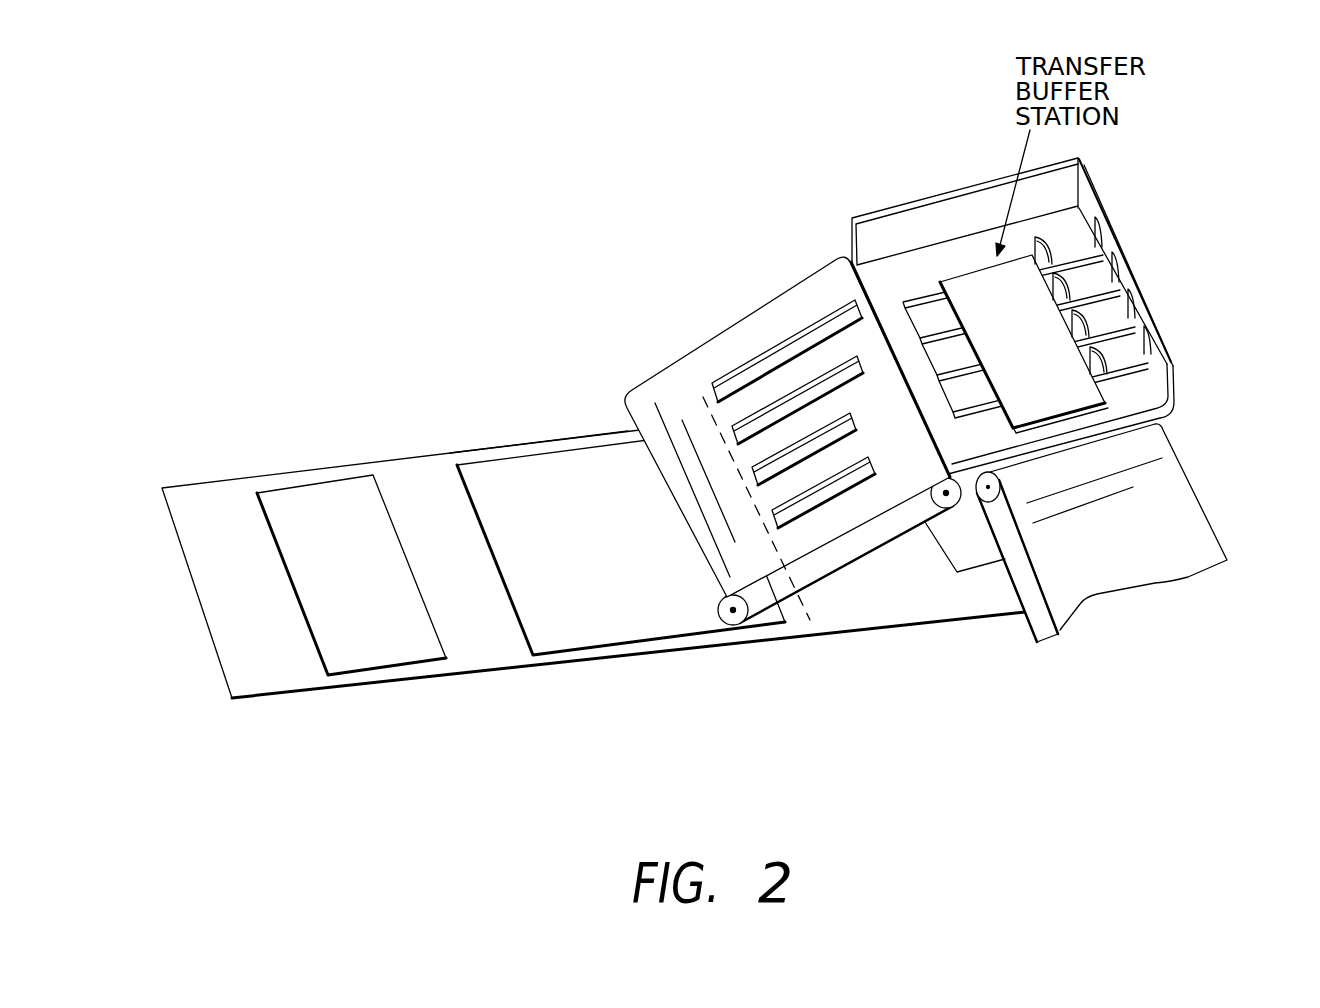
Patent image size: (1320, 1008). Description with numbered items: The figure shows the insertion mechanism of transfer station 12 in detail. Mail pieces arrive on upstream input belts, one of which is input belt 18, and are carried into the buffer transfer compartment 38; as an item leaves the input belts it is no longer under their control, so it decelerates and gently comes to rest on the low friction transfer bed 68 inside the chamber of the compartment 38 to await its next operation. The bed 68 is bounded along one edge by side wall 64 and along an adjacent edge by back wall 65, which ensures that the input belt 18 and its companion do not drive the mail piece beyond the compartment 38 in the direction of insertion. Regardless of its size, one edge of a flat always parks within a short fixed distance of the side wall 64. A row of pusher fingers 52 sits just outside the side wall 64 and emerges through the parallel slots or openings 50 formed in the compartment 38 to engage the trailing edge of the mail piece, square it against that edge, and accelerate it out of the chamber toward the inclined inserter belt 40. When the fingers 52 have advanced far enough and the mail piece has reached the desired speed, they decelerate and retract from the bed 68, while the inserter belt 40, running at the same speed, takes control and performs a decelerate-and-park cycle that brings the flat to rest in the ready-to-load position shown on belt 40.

The transfer station 12 is at (1230, 178).
The input belt 18 is at (1160, 583).
The buffer transfer compartment 38 is at (925, 232).
The inclined inserter belt 40 is at (777, 597).
The parallel slots 50 is at (954, 415).
The pusher fingers 52 is at (1145, 328).
The side wall 64 is at (1174, 362).
The back wall 65 is at (850, 218).
The transfer bed 68 is at (893, 287).